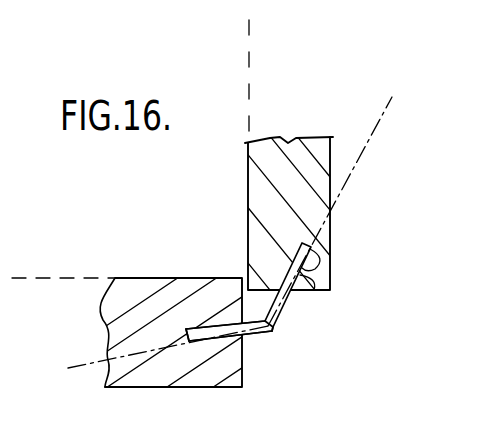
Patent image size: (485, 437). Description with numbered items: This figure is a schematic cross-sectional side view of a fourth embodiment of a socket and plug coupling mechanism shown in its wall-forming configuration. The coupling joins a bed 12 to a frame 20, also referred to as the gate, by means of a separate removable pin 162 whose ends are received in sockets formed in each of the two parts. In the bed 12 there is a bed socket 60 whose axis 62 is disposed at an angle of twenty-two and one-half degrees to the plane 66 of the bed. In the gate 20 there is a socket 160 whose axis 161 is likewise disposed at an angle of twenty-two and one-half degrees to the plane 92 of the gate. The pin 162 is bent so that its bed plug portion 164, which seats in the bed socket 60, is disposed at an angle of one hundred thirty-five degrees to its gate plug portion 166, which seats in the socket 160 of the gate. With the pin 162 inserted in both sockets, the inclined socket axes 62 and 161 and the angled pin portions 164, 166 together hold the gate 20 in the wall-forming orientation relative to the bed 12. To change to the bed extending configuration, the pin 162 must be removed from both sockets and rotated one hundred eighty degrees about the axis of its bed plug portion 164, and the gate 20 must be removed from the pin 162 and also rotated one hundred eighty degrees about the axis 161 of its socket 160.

The bed 12 is at (137, 293).
The frame 20 is at (306, 140).
The bed socket 60 is at (198, 343).
The axis of the bed socket 62 is at (82, 365).
The plane of the bed 66 is at (47, 278).
The plane of the gate 92 is at (250, 64).
The socket 160 is at (310, 262).
The axis of the socket 161 is at (390, 118).
The removable pin 162 is at (274, 326).
The bed plug portion 164 is at (250, 333).
The gate plug portion 166 is at (312, 285).